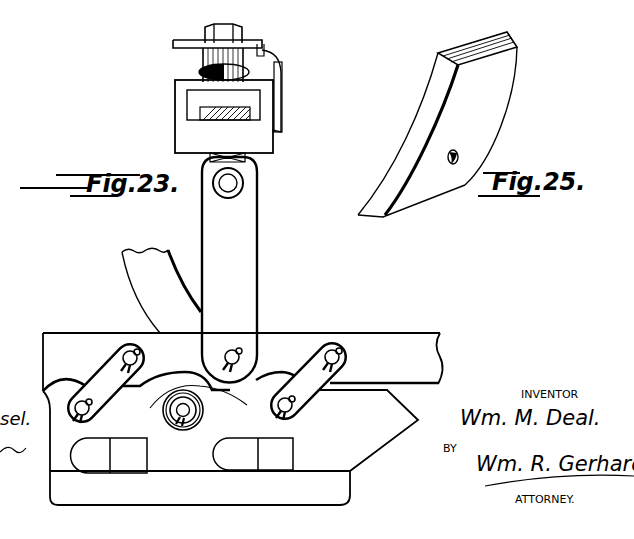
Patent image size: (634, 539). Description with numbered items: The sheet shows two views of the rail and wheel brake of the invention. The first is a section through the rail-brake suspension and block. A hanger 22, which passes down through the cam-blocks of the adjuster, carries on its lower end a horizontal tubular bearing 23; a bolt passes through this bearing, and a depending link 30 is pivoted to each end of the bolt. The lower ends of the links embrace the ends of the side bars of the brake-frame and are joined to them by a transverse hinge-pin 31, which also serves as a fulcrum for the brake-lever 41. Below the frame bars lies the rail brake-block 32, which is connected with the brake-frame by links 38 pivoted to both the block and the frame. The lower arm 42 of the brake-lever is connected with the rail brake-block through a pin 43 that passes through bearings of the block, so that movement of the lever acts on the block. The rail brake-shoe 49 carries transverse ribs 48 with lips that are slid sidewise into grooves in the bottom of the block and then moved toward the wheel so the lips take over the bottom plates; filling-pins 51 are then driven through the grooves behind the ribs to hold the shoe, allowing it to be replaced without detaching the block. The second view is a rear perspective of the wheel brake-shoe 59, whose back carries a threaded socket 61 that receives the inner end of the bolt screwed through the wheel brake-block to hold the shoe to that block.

In FIG. 23, the hanger 22 is at (227, 93).
In FIG. 23, the tubular bearing 23 is at (243, 190).
In FIG. 23, the link 30 is at (243, 282).
In FIG. 23, the hinge-pin 31 is at (250, 364).
In FIG. 23, the rail brake-block 32 is at (369, 429).
In FIG. 23, the link 38 is at (102, 375).
In FIG. 23, the brake-lever 41 is at (146, 307).
In FIG. 23, the lower arm 42 is at (214, 402).
In FIG. 23, the pin 43 is at (180, 417).
In FIG. 23, the transverse rib 48 is at (284, 451).
In FIG. 23, the rail brake-shoe 49 is at (340, 486).
In FIG. 23, the filling-pin 51 is at (98, 456).
In FIG. 25, the wheel brake-shoe 59 is at (488, 104).
In FIG. 25, the threaded socket 61 is at (452, 150).